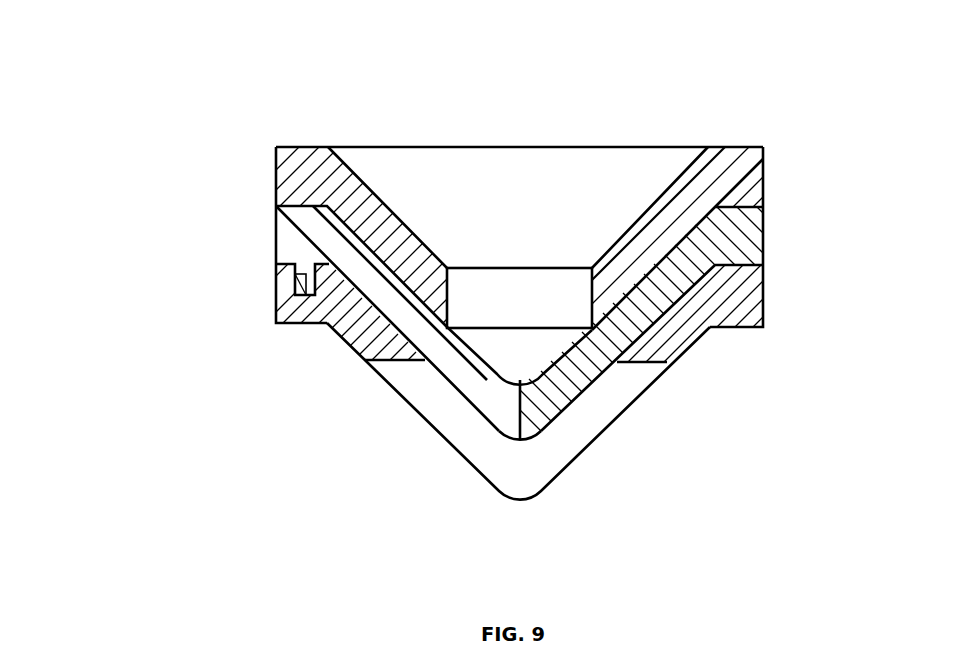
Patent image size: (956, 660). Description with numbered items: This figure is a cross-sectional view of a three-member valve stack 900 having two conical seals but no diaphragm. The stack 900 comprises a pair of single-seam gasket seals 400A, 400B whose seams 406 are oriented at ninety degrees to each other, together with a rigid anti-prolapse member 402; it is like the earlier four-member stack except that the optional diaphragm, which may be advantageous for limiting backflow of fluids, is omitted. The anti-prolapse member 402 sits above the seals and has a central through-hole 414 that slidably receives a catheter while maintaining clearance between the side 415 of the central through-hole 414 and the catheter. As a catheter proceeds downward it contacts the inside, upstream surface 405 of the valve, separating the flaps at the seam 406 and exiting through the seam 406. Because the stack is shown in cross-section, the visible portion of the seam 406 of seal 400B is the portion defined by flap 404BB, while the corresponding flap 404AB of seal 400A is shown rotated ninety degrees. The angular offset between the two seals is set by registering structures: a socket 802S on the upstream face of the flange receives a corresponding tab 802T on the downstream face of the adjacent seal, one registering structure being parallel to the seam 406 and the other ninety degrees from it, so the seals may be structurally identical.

The three-member valve stack 900 is at (850, 134).
The anti-prolapse member 402 is at (763, 147).
The single-seam gasket seal 400A is at (763, 206).
The single-seam gasket seal 400B is at (345, 330).
The socket 802S is at (169, 278).
The tab 802T is at (306, 274).
The flap 404AB is at (572, 362).
The flap 404BB is at (640, 385).
The inside (upstream) surface 405 is at (507, 352).
The seam 406 is at (505, 412).
The central through-hole 414 is at (455, 355).
The side 415 is at (452, 356).